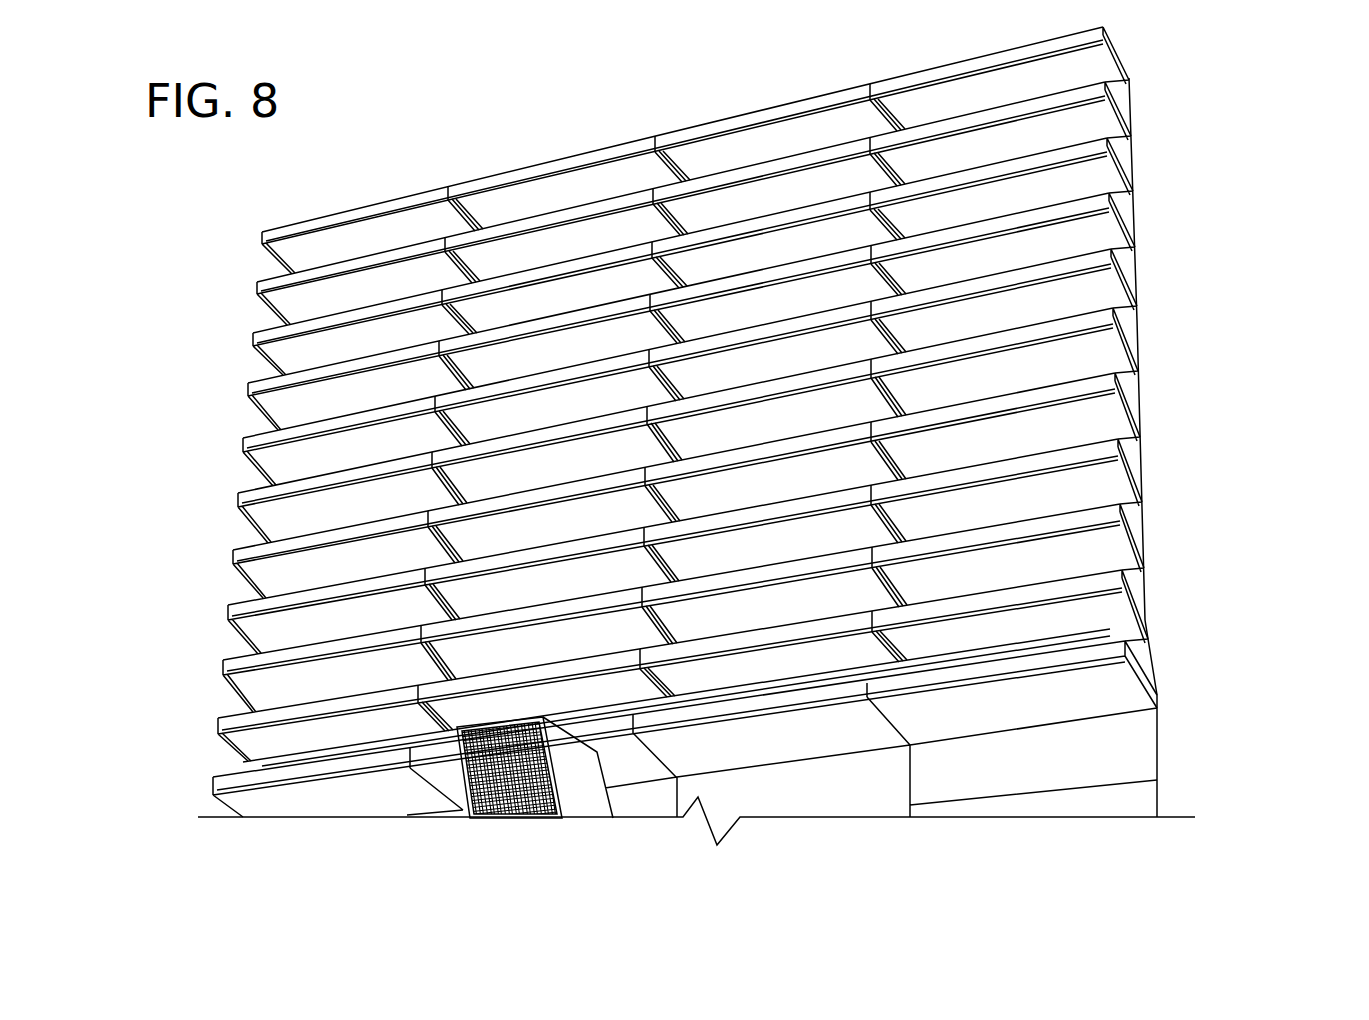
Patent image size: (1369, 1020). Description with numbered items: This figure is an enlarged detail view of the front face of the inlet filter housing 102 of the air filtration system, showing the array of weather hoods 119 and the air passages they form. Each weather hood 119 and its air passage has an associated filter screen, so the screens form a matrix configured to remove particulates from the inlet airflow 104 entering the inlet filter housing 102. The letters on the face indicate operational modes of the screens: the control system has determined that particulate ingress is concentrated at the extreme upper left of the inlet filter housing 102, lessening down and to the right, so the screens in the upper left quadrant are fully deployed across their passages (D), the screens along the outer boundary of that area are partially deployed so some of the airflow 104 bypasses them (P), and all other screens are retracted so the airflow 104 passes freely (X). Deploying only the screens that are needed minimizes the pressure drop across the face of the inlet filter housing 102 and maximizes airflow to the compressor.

The inlet filter housing 102 is at (1202, 238).
The inlet airflow 104 is at (198, 727).
The weather hood 119 is at (252, 608).